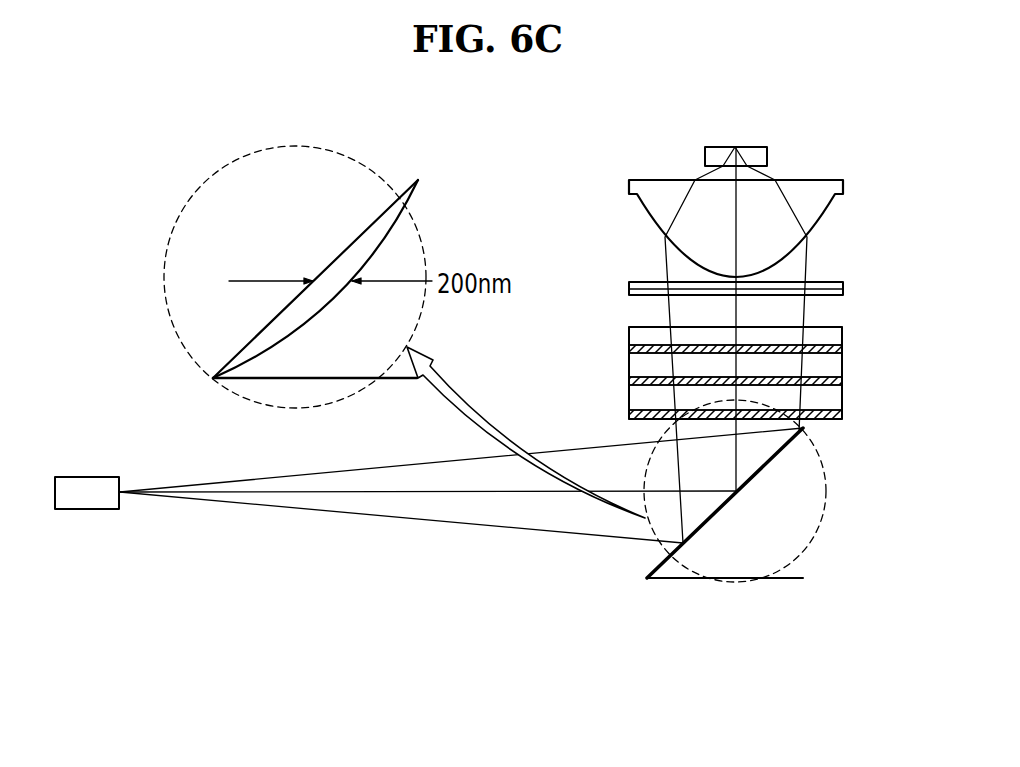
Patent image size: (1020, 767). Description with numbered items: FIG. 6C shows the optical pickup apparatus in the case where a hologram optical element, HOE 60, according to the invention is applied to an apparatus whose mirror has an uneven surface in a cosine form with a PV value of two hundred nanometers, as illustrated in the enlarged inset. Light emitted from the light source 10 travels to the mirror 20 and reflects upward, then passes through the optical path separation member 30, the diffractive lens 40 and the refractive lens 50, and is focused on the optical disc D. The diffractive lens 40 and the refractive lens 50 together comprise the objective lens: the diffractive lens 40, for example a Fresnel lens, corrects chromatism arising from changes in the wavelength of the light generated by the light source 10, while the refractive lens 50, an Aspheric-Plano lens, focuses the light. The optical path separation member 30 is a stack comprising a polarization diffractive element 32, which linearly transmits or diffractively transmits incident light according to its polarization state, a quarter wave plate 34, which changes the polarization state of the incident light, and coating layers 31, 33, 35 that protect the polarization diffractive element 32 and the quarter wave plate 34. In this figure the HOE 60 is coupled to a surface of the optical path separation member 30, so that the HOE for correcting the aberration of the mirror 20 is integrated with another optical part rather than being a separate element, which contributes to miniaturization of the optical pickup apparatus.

The light source 10 is at (102, 477).
The mirror 20 is at (663, 578).
The optical path separation member 30 is at (557, 303).
The coating layer 31 is at (645, 398).
The polarization diffractive element 32 is at (645, 378).
The coating layer 33 is at (645, 363).
The quarter wave plate 34 is at (645, 347).
The coating layer 35 is at (645, 332).
The diffractive lens 40 is at (629, 288).
The refractive lens 50 is at (642, 207).
The hologram optical element 60 is at (842, 415).
The optical disc D is at (767, 157).